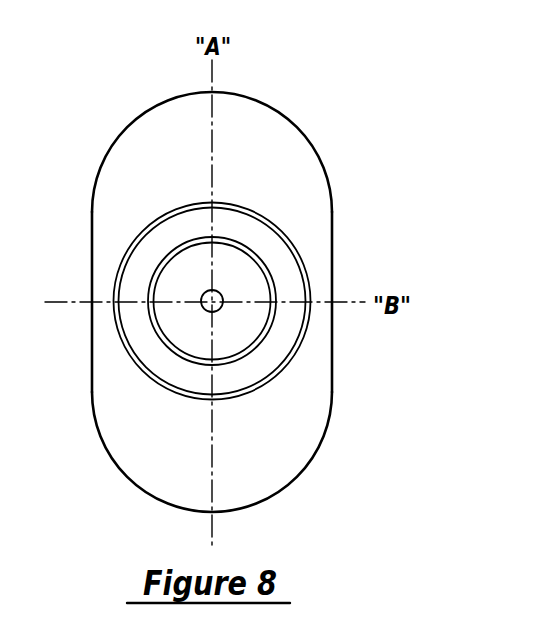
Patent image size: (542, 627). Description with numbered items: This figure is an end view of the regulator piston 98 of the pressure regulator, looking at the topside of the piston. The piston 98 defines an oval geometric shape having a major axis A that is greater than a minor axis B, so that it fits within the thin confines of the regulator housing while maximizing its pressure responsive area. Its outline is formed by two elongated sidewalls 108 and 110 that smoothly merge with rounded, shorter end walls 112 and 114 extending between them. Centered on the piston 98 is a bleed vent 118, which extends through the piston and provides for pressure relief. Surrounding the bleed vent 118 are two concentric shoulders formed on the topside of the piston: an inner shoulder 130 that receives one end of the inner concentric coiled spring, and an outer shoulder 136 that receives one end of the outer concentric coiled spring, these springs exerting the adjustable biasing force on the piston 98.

The regulator piston 98 is at (210, 299).
The elongated sidewall 108 is at (90, 358).
The elongated sidewall 110 is at (333, 358).
The end wall 112 is at (245, 92).
The end wall 114 is at (247, 512).
The bleed vent 118 is at (203, 291).
The shoulder 130 is at (232, 260).
The shoulder 136 is at (242, 373).